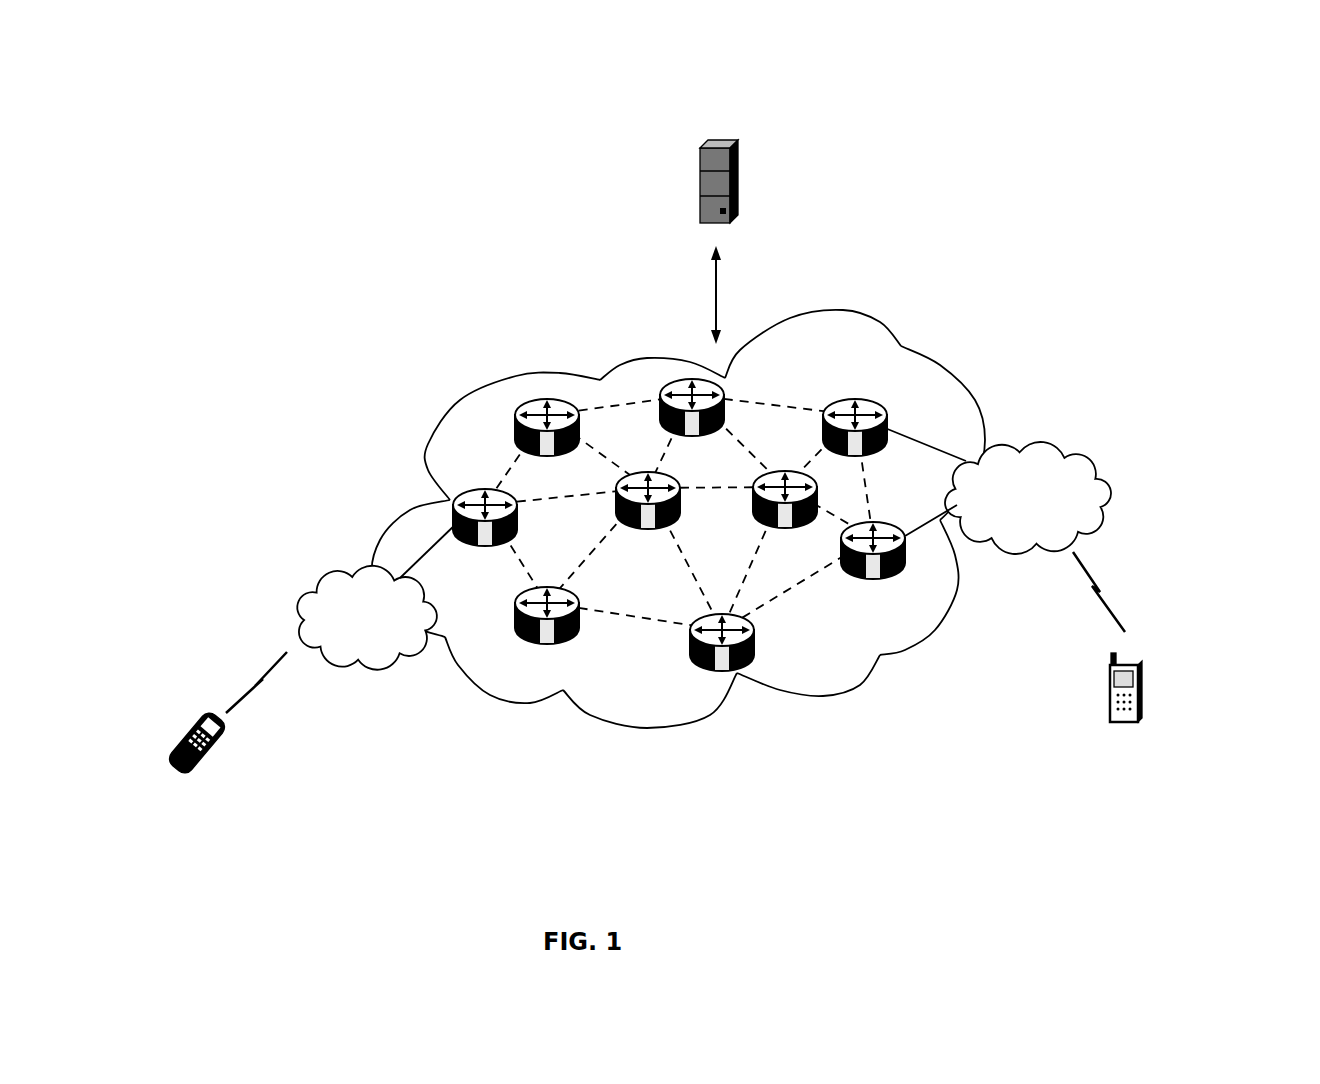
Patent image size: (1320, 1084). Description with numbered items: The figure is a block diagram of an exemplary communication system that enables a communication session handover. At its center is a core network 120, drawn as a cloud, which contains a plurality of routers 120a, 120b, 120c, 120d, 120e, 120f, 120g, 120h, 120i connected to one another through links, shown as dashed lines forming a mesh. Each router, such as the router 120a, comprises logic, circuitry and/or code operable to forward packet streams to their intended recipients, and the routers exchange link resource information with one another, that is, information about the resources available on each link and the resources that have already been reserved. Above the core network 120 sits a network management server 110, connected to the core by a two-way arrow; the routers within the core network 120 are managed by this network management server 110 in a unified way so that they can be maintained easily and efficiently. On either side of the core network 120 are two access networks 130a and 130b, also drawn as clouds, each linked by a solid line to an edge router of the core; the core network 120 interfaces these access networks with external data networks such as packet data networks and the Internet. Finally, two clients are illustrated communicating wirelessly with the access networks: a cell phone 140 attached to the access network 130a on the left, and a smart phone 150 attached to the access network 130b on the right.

The network management server 110 is at (699, 150).
The core network 120 is at (845, 307).
The router 120a is at (528, 404).
The router 120b is at (680, 382).
The router 120c is at (856, 401).
The router 120d is at (472, 492).
The router 120e is at (640, 474).
The router 120f is at (781, 474).
The router 120g is at (886, 524).
The router 120h is at (541, 632).
The router 120i is at (750, 655).
The access network 130a is at (298, 588).
The access network 130b is at (1082, 459).
The cell phone 140 is at (184, 776).
The smart phone 150 is at (1153, 705).